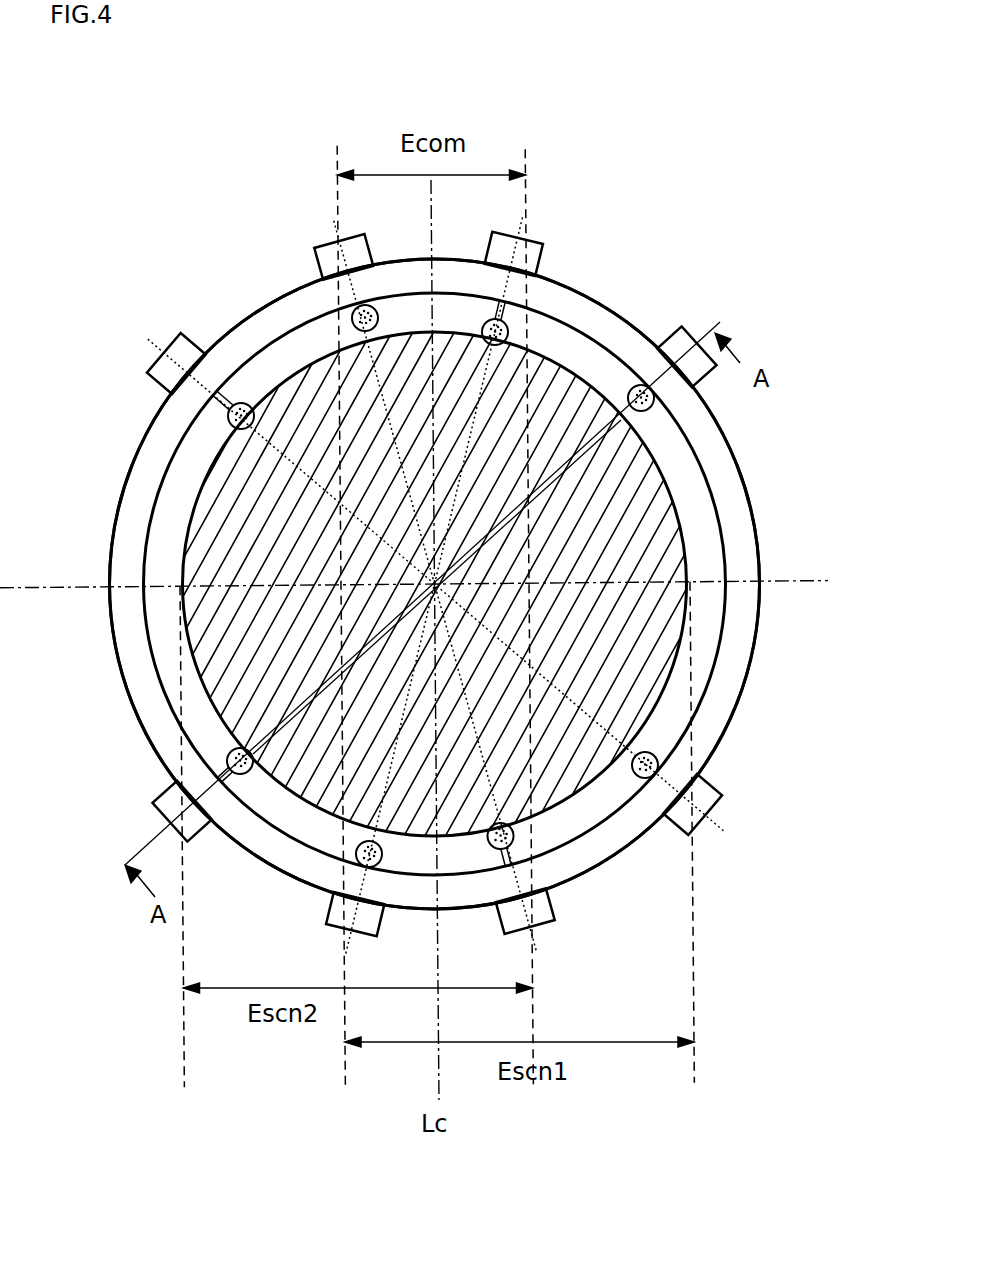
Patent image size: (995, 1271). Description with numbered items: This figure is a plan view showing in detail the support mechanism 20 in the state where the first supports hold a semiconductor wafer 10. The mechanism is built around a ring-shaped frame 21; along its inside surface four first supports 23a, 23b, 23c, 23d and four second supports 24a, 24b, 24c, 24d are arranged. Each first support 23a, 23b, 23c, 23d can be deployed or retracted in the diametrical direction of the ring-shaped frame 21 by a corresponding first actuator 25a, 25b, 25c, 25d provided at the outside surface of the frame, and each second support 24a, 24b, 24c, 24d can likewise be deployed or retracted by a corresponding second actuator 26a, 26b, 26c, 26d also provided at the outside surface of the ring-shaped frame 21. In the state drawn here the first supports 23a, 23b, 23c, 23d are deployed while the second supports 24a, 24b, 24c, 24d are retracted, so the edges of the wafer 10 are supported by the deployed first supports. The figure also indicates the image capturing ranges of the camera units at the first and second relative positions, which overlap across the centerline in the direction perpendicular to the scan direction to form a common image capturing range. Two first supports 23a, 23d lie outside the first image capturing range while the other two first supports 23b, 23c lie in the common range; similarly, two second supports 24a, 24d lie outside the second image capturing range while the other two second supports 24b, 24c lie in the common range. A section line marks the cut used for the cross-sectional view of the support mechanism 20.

The wafer 10 is at (667, 540).
The support mechanism 20 is at (220, 297).
The ring-shaped frame 21 is at (130, 488).
The first support 23a is at (229, 422).
The first support 23b is at (506, 328).
The first support 23c is at (512, 840).
The first support 23d is at (228, 757).
The second support 24a is at (658, 763).
The second support 24b is at (356, 856).
The second support 24c is at (355, 309).
The second support 24d is at (654, 405).
The first actuator 25a is at (176, 333).
The first actuator 25b is at (545, 248).
The first actuator 25c is at (545, 917).
The first actuator 25d is at (163, 789).
The second actuator 26a is at (712, 805).
The second actuator 26b is at (330, 925).
The second actuator 26c is at (324, 244).
The second actuator 26d is at (688, 333).